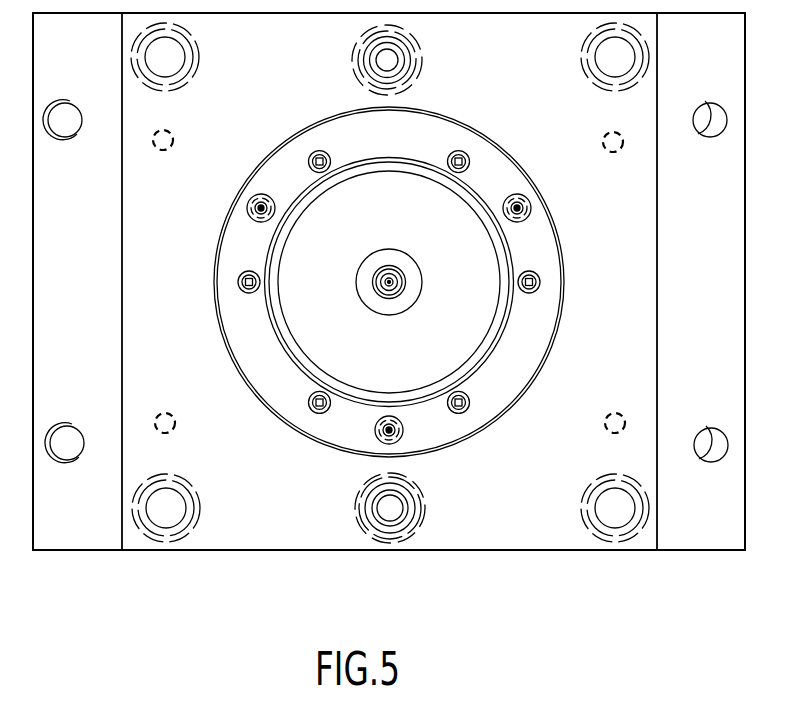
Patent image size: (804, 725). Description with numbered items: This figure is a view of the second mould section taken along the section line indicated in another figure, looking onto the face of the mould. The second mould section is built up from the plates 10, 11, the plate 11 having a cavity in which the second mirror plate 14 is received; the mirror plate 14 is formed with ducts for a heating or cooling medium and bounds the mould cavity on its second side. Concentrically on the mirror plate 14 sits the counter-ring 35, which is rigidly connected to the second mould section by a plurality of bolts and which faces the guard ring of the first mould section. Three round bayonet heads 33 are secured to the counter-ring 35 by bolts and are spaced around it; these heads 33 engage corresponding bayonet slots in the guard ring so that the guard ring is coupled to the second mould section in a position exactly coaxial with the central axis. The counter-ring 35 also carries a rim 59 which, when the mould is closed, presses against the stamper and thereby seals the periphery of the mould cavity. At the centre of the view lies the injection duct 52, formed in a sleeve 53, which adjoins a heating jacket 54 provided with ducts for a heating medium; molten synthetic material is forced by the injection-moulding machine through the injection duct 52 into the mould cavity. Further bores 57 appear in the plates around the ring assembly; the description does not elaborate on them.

The plate 10 is at (690, 512).
The plate 11 is at (546, 513).
The second mirror plate 14 is at (482, 312).
The bayonet heads 33 is at (246, 202).
The counter-ring 35 is at (530, 348).
The injection duct 52 is at (400, 280).
The sleeve 53 is at (393, 289).
The heating jacket 54 is at (374, 265).
The bores 57 is at (387, 63).
The rim 59 is at (474, 205).